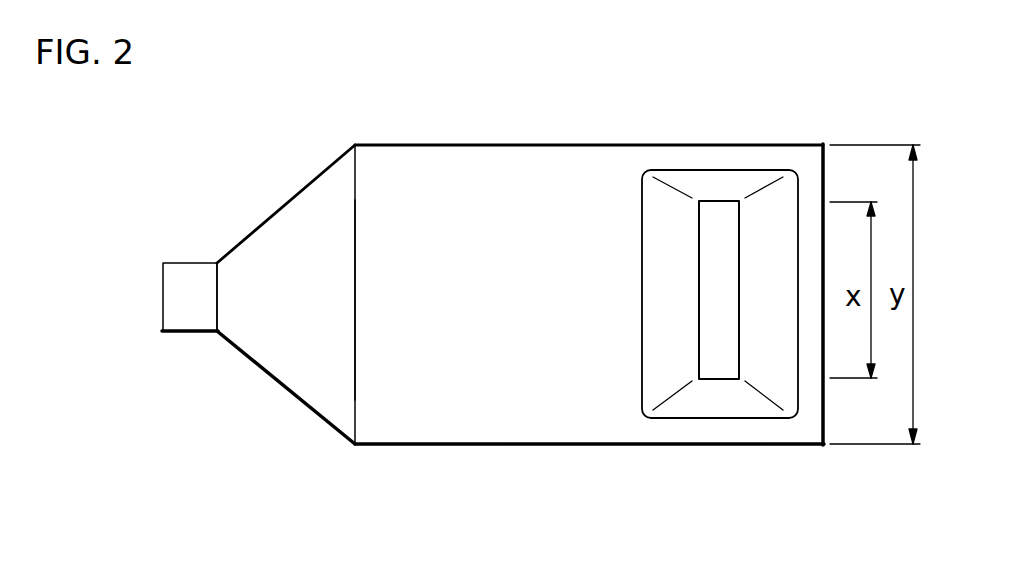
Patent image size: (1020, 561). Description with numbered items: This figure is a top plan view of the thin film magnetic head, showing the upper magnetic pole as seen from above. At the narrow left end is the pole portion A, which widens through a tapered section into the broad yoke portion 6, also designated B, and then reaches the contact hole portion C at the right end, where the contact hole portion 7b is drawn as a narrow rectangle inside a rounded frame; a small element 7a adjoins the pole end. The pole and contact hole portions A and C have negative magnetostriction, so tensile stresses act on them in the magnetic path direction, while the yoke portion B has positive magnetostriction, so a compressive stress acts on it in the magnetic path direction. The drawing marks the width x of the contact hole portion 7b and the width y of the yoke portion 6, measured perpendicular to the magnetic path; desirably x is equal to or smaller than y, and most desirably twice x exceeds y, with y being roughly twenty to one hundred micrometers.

The yoke portion 6 is at (402, 160).
The light entrance portion 7a is at (162, 299).
The contact hole portion 7b is at (720, 215).
The pole portion A is at (212, 298).
The yoke portion B is at (470, 285).
The contact hole portion C is at (640, 255).